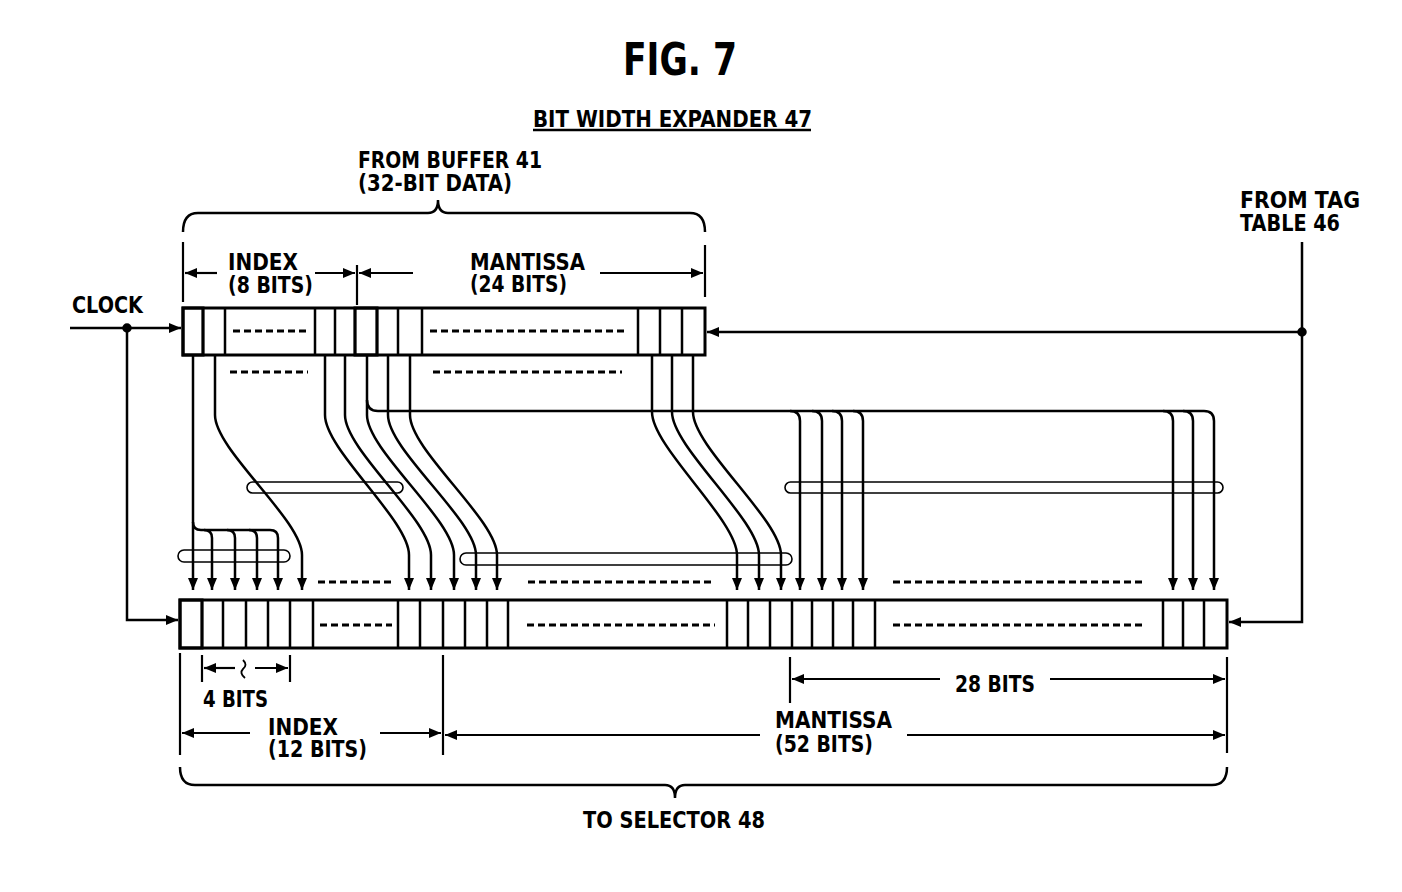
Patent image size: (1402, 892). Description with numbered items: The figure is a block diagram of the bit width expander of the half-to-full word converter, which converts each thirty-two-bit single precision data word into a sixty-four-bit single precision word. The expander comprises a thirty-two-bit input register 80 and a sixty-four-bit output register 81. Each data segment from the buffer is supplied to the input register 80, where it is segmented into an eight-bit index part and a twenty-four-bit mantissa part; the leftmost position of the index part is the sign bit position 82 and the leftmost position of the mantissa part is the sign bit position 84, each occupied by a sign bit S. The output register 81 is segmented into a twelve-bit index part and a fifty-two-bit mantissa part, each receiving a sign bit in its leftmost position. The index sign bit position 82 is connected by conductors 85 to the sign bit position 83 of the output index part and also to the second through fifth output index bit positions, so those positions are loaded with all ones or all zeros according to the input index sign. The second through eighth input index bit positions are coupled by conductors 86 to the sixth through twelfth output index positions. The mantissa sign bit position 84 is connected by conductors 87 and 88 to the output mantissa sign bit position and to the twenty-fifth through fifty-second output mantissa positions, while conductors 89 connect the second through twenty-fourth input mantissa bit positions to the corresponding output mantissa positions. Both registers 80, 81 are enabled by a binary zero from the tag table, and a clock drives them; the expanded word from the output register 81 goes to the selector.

The input register 80 is at (707, 320).
The output register 81 is at (1230, 637).
The sign bit position of index part of input register 82 is at (184, 357).
The sign bit position of index part of output register 83 is at (179, 607).
The sign bit position of mantissa part of input register 84 is at (368, 308).
The conductors 85 is at (180, 555).
The conductors 86 is at (294, 483).
The conductors 87 is at (420, 487).
The conductors 88 is at (928, 482).
The conductors 89 is at (582, 554).